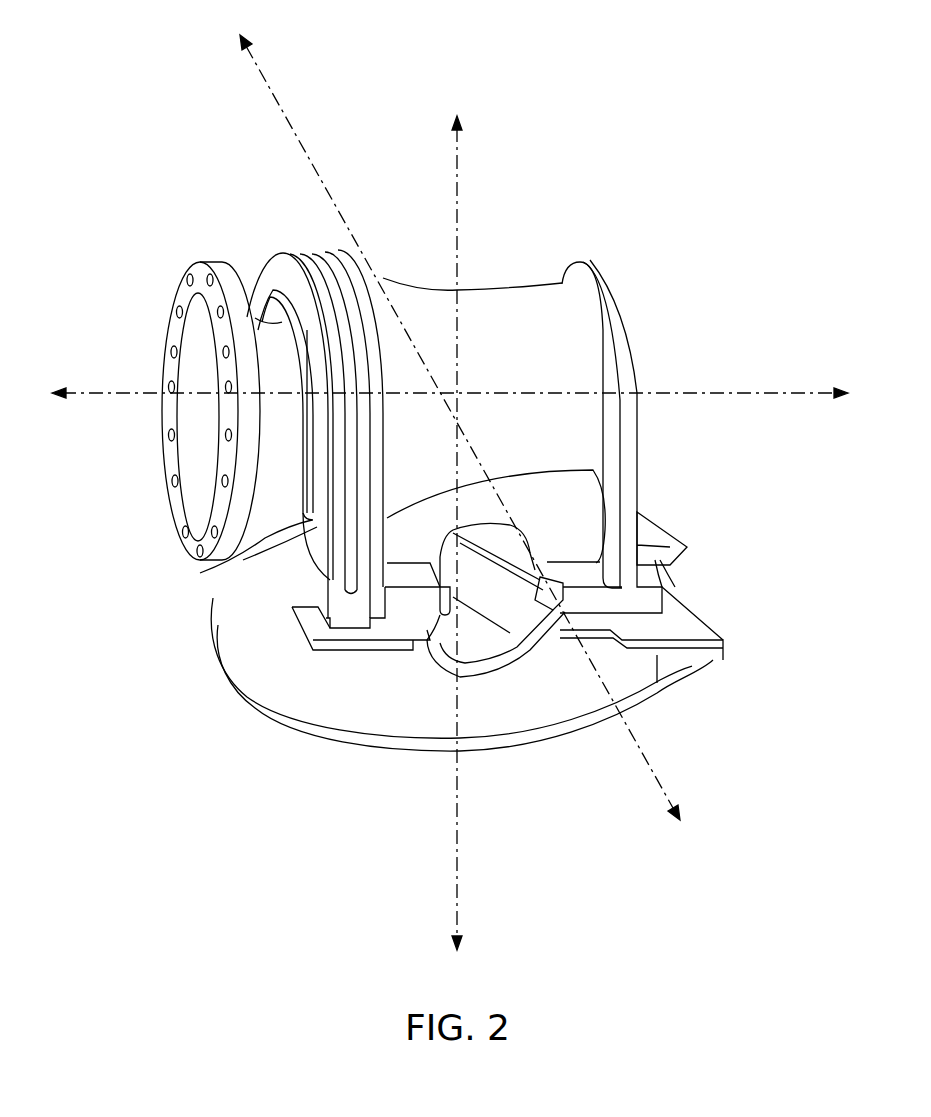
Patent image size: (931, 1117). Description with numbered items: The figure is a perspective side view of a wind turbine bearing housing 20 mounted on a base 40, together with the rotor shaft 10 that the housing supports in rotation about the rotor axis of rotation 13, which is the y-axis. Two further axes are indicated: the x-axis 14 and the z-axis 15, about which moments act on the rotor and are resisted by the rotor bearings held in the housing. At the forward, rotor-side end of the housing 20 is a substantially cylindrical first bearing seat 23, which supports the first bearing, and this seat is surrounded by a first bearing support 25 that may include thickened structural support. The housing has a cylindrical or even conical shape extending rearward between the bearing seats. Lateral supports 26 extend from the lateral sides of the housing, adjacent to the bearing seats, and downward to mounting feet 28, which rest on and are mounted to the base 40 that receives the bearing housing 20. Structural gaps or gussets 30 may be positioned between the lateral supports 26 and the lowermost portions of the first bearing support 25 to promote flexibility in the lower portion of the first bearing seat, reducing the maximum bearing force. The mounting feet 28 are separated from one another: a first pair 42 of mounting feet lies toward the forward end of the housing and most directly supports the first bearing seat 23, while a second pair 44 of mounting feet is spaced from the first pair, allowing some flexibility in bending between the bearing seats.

The rotor shaft 10 is at (215, 267).
The rotor axis of rotation 13 is at (82, 383).
The x-axis 14 is at (262, 62).
The z-axis 15 is at (467, 148).
The bearing housing 20 is at (395, 290).
The first bearing seat 23 is at (263, 316).
The first bearing support 25 is at (290, 277).
The lateral supports 26 is at (623, 480).
The mounting feet 28 is at (630, 602).
The structural gaps or gussets 30 is at (322, 618).
The base 40 is at (627, 670).
The first pair of mounting feet 42 is at (385, 605).
The second pair of mounting feet 44 is at (613, 593).